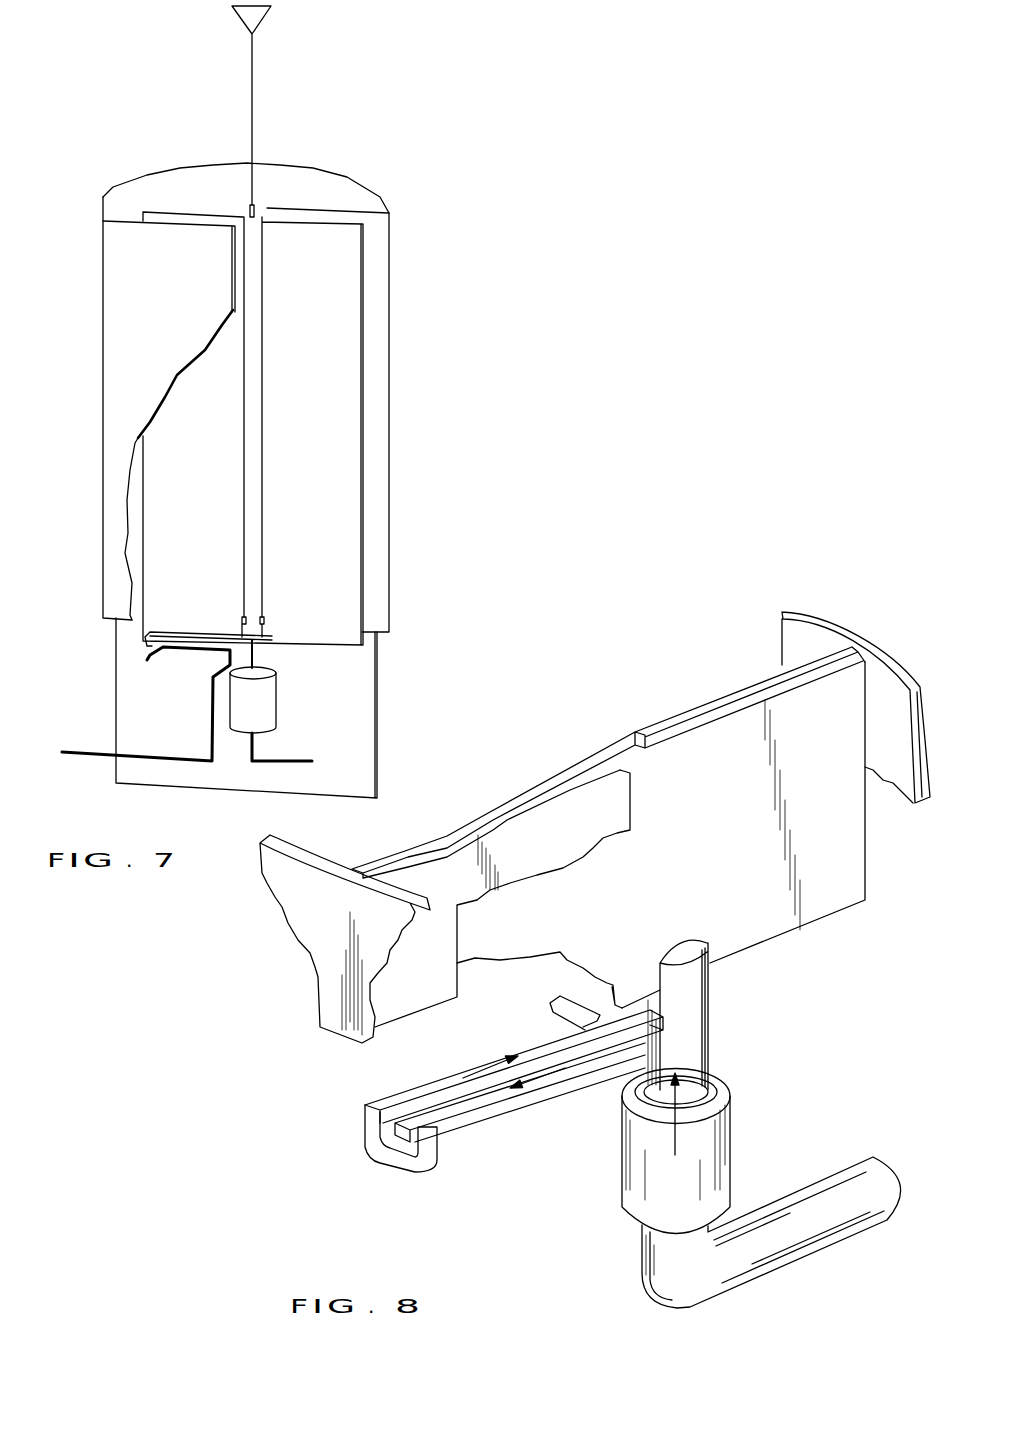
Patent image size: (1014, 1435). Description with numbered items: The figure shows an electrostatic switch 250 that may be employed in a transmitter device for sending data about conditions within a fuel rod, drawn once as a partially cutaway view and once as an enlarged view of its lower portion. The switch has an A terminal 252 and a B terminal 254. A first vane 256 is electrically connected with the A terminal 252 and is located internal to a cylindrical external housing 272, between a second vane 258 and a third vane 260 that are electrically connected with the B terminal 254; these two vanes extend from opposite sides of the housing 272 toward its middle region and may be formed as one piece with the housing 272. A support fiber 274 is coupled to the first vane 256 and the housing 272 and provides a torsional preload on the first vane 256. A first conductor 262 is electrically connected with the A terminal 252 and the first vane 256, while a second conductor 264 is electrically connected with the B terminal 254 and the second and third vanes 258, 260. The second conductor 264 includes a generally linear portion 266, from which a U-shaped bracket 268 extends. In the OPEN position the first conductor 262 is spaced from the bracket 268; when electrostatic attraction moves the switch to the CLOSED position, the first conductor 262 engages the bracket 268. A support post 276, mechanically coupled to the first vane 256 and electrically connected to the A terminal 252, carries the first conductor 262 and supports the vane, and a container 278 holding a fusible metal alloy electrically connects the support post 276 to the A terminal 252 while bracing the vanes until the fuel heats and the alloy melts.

In FIG. 7, the electrostatic switch 250 is at (518, 296).
In FIG. 8, the electrostatic switch 250 is at (953, 621).
In FIG. 7, the A terminal 252 is at (362, 750).
In FIG. 8, the A terminal 252 is at (931, 1128).
In FIG. 7, the B terminal 254 is at (67, 777).
In FIG. 8, the B terminal 254 is at (515, 961).
In FIG. 7, the first vane 256 is at (350, 437).
In FIG. 8, the first vane 256 is at (750, 737).
In FIG. 7, the second vane 258 is at (125, 260).
In FIG. 8, the second vane 258 is at (412, 994).
In FIG. 7, the third vane 260 is at (385, 242).
In FIG. 8, the third vane 260 is at (770, 672).
In FIG. 8, the first conductor 262 is at (512, 1114).
In FIG. 8, the second conductor 264 is at (366, 1085).
In FIG. 8, the linear portion 266 is at (527, 1037).
In FIG. 8, the U-shaped bracket 268 is at (402, 1162).
In FIG. 7, the external housing 272 is at (347, 181).
In FIG. 8, the external housing 272 is at (312, 902).
In FIG. 7, the support fiber 274 is at (253, 91).
In FIG. 8, the support post 276 is at (703, 1002).
In FIG. 7, the container 278 is at (270, 686).
In FIG. 8, the container 278 is at (720, 1140).